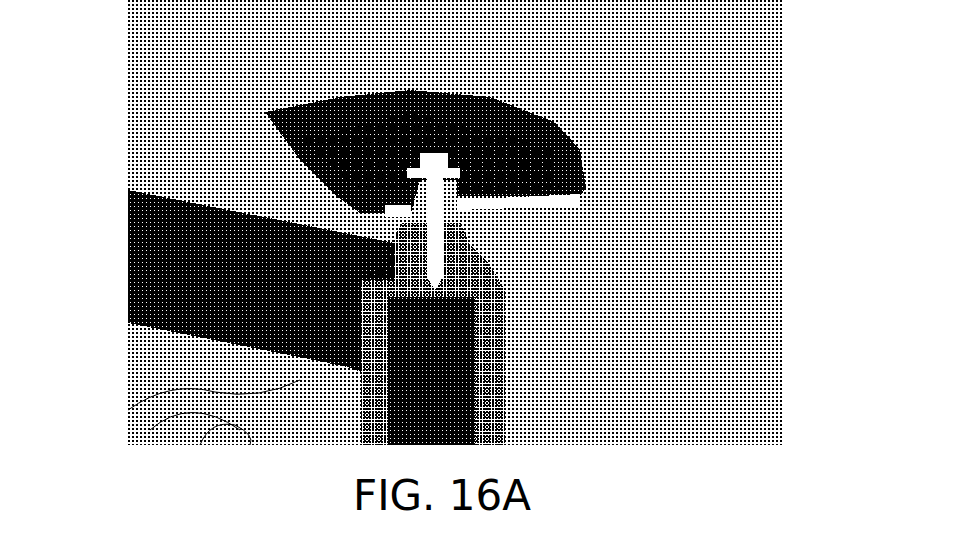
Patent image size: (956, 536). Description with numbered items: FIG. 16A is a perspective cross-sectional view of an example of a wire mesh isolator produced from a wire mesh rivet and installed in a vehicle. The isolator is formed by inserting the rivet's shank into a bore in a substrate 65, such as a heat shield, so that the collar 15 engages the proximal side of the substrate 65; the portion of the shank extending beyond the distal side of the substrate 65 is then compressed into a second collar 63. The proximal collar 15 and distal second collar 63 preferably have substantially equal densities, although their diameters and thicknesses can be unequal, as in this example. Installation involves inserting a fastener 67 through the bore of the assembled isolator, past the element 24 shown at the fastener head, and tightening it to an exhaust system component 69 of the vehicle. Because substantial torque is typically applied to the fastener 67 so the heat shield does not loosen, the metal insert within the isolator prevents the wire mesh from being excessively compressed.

The collar 15 is at (410, 190).
The fastener 67 is at (447, 160).
The washer 24 is at (460, 172).
The substrate 65 is at (540, 195).
The second collar of wire mesh isolator 63 is at (411, 223).
The exhaust system component 69 is at (490, 283).